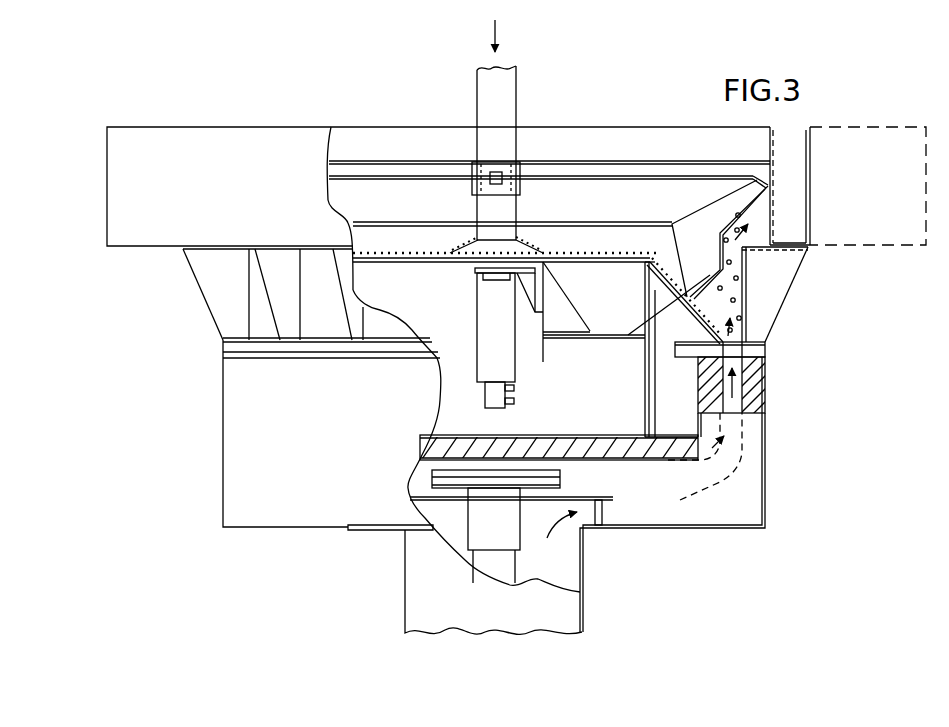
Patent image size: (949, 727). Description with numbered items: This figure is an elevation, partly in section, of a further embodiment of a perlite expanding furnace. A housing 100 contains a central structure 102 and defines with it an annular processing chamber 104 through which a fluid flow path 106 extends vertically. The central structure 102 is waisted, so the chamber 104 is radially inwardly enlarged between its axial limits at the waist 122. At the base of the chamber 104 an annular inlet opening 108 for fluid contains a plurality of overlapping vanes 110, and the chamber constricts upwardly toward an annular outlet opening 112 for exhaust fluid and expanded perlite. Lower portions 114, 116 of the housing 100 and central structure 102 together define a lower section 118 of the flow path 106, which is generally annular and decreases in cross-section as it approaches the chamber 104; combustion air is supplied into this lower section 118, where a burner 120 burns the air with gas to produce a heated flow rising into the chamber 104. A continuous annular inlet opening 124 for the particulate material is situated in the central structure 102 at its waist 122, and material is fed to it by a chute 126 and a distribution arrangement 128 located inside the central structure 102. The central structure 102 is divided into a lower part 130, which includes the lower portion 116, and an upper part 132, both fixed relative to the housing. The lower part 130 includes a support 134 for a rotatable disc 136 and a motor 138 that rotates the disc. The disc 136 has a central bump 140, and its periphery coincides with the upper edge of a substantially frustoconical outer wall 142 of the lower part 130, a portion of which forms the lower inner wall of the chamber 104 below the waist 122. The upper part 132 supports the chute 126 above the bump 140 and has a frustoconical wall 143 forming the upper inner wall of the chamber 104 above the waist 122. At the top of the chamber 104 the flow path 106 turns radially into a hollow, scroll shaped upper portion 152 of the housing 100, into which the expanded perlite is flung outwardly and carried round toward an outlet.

The housing 100 is at (236, 422).
The central structure 102 is at (378, 224).
The annular processing chamber 104 is at (697, 292).
The fluid flow path 106 is at (745, 402).
The annular inlet opening 108 is at (767, 351).
The overlapping vanes 110 is at (748, 338).
The annular outlet opening 112 is at (748, 253).
The lower portion of the housing 114 is at (748, 530).
The lower portion of the central structure 116 is at (677, 443).
The lower section of the flow path 118 is at (668, 440).
The burner 120 is at (548, 480).
The waist 122 is at (683, 308).
The annular inlet opening for particulate material 124 is at (650, 310).
The chute 126 is at (512, 85).
The distribution arrangement 128 is at (540, 221).
The lower part of the central structure 130 is at (645, 298).
The upper part of the central structure 132 is at (596, 225).
The support 134 is at (560, 342).
The rotatable disc 136 is at (440, 262).
The motor 138 is at (488, 323).
The central bump 140 is at (470, 248).
The frustoconical outer wall 142 is at (645, 270).
The frustoconical wall 143 is at (712, 268).
The scroll shaped upper portion of the housing 152 is at (210, 142).